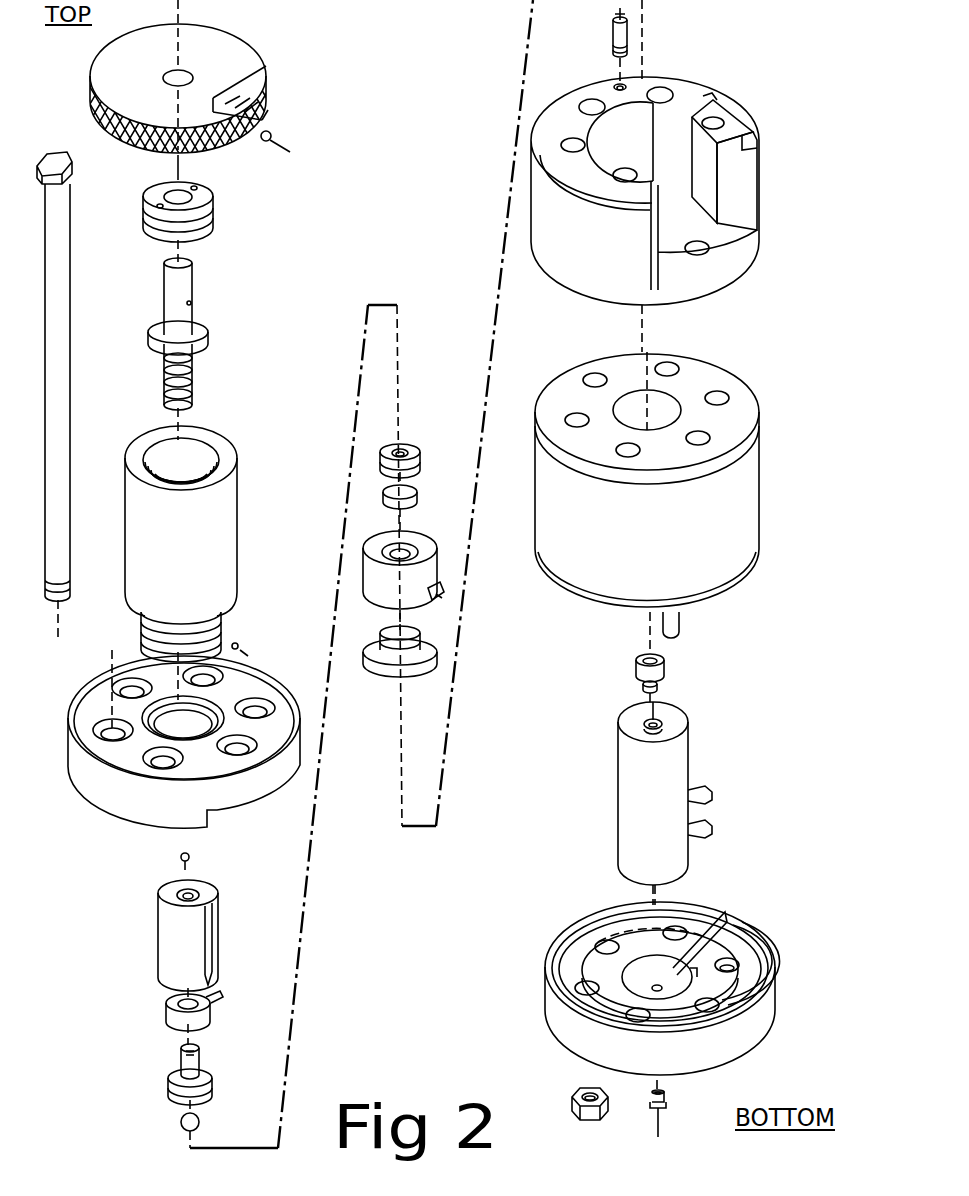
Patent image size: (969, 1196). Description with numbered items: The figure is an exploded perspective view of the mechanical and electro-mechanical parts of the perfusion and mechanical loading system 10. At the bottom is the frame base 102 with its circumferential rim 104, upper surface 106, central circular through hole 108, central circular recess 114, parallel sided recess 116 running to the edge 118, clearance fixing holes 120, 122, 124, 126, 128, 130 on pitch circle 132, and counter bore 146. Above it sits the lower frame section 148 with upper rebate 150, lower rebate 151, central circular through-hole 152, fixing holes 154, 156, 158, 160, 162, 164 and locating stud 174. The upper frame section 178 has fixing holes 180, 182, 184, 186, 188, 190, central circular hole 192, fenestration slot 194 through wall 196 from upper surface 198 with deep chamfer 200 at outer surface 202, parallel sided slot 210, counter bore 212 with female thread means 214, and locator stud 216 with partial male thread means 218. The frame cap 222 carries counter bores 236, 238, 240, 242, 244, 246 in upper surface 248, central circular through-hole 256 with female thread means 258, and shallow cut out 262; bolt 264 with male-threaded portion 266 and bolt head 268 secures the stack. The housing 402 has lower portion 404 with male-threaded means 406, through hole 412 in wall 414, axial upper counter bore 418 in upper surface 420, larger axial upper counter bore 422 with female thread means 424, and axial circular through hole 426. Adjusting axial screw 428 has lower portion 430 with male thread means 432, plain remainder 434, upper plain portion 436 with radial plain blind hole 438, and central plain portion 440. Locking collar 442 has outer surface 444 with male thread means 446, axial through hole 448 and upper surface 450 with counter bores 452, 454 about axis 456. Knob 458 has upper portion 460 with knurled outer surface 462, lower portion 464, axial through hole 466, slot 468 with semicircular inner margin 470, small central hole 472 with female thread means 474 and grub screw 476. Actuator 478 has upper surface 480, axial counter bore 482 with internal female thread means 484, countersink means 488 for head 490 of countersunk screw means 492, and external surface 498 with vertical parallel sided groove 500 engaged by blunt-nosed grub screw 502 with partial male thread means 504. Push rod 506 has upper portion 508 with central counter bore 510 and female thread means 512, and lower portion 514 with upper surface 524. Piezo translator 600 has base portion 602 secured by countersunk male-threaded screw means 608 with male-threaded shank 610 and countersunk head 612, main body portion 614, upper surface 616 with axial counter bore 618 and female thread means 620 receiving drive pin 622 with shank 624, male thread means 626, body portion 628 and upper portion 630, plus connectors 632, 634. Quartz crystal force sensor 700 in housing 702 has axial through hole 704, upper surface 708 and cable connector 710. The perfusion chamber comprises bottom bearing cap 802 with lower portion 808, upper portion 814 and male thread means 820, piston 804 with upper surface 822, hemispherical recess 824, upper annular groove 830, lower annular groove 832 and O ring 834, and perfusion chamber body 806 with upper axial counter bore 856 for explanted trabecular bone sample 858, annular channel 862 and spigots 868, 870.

The perfusion and mechanical loading system 10 is at (395, 64).
The frame base 102 is at (718, 1043).
The circumferential rim 104 is at (630, 1022).
The upper surface 106 is at (637, 973).
The central circular through hole 108 is at (608, 973).
The central circular recess 114 is at (735, 982).
The parallel sided recess 116 is at (733, 917).
The edge 118 is at (752, 962).
The clearance fixing hole 120 is at (724, 911).
The clearance fixing hole 122 is at (740, 957).
The clearance fixing hole 124 is at (716, 1010).
The clearance fixing hole 126 is at (630, 1015).
The clearance fixing hole 128 is at (583, 985).
The clearance fixing hole 130 is at (608, 945).
The pitch circle 132 is at (735, 993).
The counter bore 146 is at (682, 1013).
The lower frame section 148 is at (710, 533).
The upper rebate 150 is at (750, 152).
The lower rebate 151 is at (712, 602).
The central circular through-hole 152 is at (680, 397).
The fixing hole 154 is at (668, 366).
The fixing hole 156 is at (720, 396).
The fixing hole 158 is at (710, 438).
The fixing hole 160 is at (640, 452).
The fixing hole 162 is at (577, 418).
The fixing hole 164 is at (597, 378).
The locating stud 174 is at (674, 630).
The upper frame section 178 is at (573, 263).
The fixing hole 180 is at (670, 93).
The fixing hole 182 is at (720, 120).
The fixing hole 184 is at (708, 248).
The fixing hole 186 is at (620, 174).
The fixing hole 188 is at (568, 146).
The fixing hole 190 is at (585, 108).
The central circular hole 192 is at (567, 126).
The fenestration slot 194 is at (717, 177).
The wall 196 is at (735, 203).
The upper surface 198 is at (593, 126).
The deep chamfer 200 is at (744, 136).
The outer surface 202 is at (758, 193).
The parallel sided slot 210 is at (712, 97).
The counter bore 212 is at (621, 84).
The female thread means 214 is at (627, 86).
The locator stud 216 is at (611, 40).
The partial male thread means 218 is at (611, 50).
The frame cap 222 is at (250, 800).
The counter bore 236 is at (212, 680).
The counter bore 238 is at (300, 690).
The counter bore 240 is at (222, 745).
The counter bore 242 is at (250, 743).
The counter bore 244 is at (262, 706).
The counter bore 246 is at (122, 686).
The upper surface 248 is at (104, 710).
The central circular through-hole 256 is at (258, 702).
The female thread means 258 is at (205, 703).
The shallow cut out 262 is at (265, 785).
The bolt 264 is at (70, 370).
The male-threaded portion 266 is at (66, 588).
The bolt head 268 is at (66, 174).
The housing 402 is at (238, 532).
The lower portion 404 is at (140, 625).
The male-threaded means 406 is at (142, 640).
The through hole 412 is at (224, 632).
The wall 414 is at (226, 642).
The axial upper counter bore 418 is at (216, 455).
The upper surface 420 is at (230, 458).
The axial upper counter bore 422 is at (200, 448).
The female thread means 424 is at (165, 450).
The axial circular through hole 426 is at (148, 456).
The adjusting axial screw 428 is at (194, 282).
The lower portion 430 is at (194, 374).
The male thread means 432 is at (194, 392).
The plain remainder 434 is at (194, 360).
The upper plain portion 436 is at (194, 296).
The radial plain blind hole 438 is at (191, 303).
The central plain portion 440 is at (208, 336).
The locking collar 442 is at (213, 210).
The outer surface 444 is at (213, 218).
The male thread means 446 is at (213, 227).
The axial through hole 448 is at (192, 197).
The upper surface 450 is at (205, 192).
The counter bore 452 is at (198, 186).
The counter bore 454 is at (150, 200).
The axis 456 is at (176, 174).
The knob 458 is at (100, 76).
The upper portion 460 is at (92, 103).
The knurled outer surface 462 is at (92, 116).
The lower portion 464 is at (130, 152).
The axial through hole 466 is at (192, 72).
The slot 468 is at (245, 100).
The semicircular inner margin 470 is at (232, 100).
The small central hole 472 is at (262, 104).
The female thread means 474 is at (262, 116).
The grub screw 476 is at (272, 136).
The actuator 478 is at (158, 937).
The upper surface 480 is at (206, 888).
The axial counter bore 482 is at (184, 897).
The internal female thread means 484 is at (180, 893).
The countersink means 488 is at (192, 890).
The head 490 is at (181, 855).
The countersunk screw means 492 is at (183, 862).
The external surface 498 is at (212, 930).
The vertical parallel sided groove 500 is at (209, 940).
The blunt-nosed grub screw 502 is at (243, 652).
The partial male thread means 504 is at (238, 646).
The push rod 506 is at (168, 1086).
The upper portion 508 is at (181, 1068).
The central counter bore 510 is at (197, 1056).
The female thread means 512 is at (196, 1050).
The lower portion 514 is at (212, 1092).
The upper surface 524 is at (206, 1078).
The piezo translator 600 is at (618, 750).
The base portion 602 is at (618, 866).
The countersunk male-threaded screw means 608 is at (667, 1110).
The male-threaded shank 610 is at (657, 1112).
The countersunk head 612 is at (664, 1104).
The main body portion 614 is at (618, 816).
The upper surface 616 is at (628, 731).
The axial counter bore 618 is at (648, 724).
The female thread means 620 is at (650, 722).
The drive pin 622 is at (658, 684).
The shank 624 is at (658, 690).
The male thread means 626 is at (652, 698).
The body portion 628 is at (664, 672).
The upper portion 630 is at (664, 662).
The connector 632 is at (713, 797).
The connector 634 is at (713, 831).
The quartz crystal force sensor 700 is at (167, 1022).
The housing 702 is at (180, 1005).
The axial through hole 704 is at (184, 1000).
The upper surface 708 is at (182, 998).
The cable connector 710 is at (222, 996).
The bottom bearing cap 802 is at (432, 660).
The piston 804 is at (412, 462).
The perfusion chamber body 806 is at (412, 540).
The lower portion 808 is at (421, 650).
The upper portion 814 is at (421, 641).
The male thread means 820 is at (415, 635).
The upper surface 822 is at (385, 448).
The hemispherical recess 824 is at (410, 452).
The upper annular groove 830 is at (382, 458).
The lower annular groove 832 is at (385, 468).
The O ring 834 is at (410, 456).
The upper axial counter bore 856 is at (406, 548).
The explanted trabecular bone sample 858 is at (414, 494).
The annular channel 862 is at (410, 553).
The spigot 868 is at (434, 586).
The spigot 870 is at (440, 596).